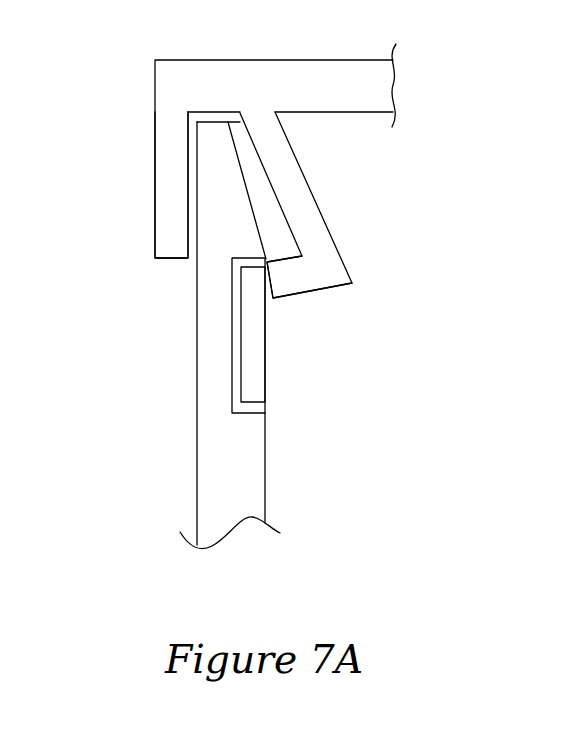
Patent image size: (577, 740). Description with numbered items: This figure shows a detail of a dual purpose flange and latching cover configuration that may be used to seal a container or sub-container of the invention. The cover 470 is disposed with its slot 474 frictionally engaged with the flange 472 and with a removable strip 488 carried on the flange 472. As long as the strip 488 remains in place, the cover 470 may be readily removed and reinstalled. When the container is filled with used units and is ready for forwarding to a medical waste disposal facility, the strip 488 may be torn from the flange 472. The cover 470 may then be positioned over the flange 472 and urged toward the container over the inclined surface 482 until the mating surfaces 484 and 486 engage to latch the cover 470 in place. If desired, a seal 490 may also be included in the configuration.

The cover 470 is at (370, 90).
The flange 472 is at (212, 358).
The slot 474 is at (193, 213).
The inclined surface 482 is at (252, 200).
The mating surface 484 is at (285, 260).
The mating surface 486 is at (252, 263).
The removable strip 488 is at (258, 383).
The seal 490 is at (213, 117).